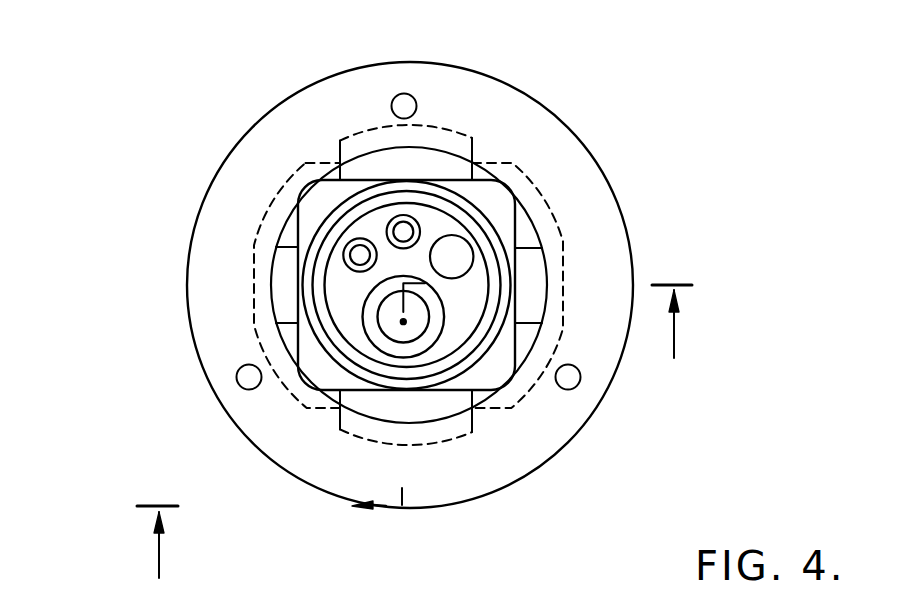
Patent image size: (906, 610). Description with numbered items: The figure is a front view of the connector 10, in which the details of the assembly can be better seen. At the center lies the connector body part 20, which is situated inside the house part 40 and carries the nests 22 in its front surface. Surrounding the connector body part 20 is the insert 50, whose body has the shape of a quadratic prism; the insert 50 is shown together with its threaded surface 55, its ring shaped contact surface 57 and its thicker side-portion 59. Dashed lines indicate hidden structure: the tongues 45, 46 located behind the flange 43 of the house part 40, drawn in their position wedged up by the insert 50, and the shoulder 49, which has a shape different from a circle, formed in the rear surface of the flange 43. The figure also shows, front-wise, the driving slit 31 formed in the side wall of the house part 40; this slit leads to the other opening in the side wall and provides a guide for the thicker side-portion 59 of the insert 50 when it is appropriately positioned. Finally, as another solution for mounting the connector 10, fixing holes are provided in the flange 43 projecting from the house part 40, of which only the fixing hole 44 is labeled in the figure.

The connector 10 is at (162, 93).
The connector body part 20 is at (463, 315).
The nests 22 is at (430, 232).
The driving slit 31 is at (276, 284).
The house part 40 is at (287, 232).
The flange 43 is at (538, 140).
The fixing hole 44 is at (400, 108).
The tongue 45 is at (361, 135).
The tongue 46 is at (432, 430).
The shoulder 49 is at (263, 344).
The insert 50 is at (312, 207).
The threaded surface 55 is at (335, 360).
The ring shaped contact surface 57 is at (363, 362).
The thicker side-portion 59 is at (531, 281).